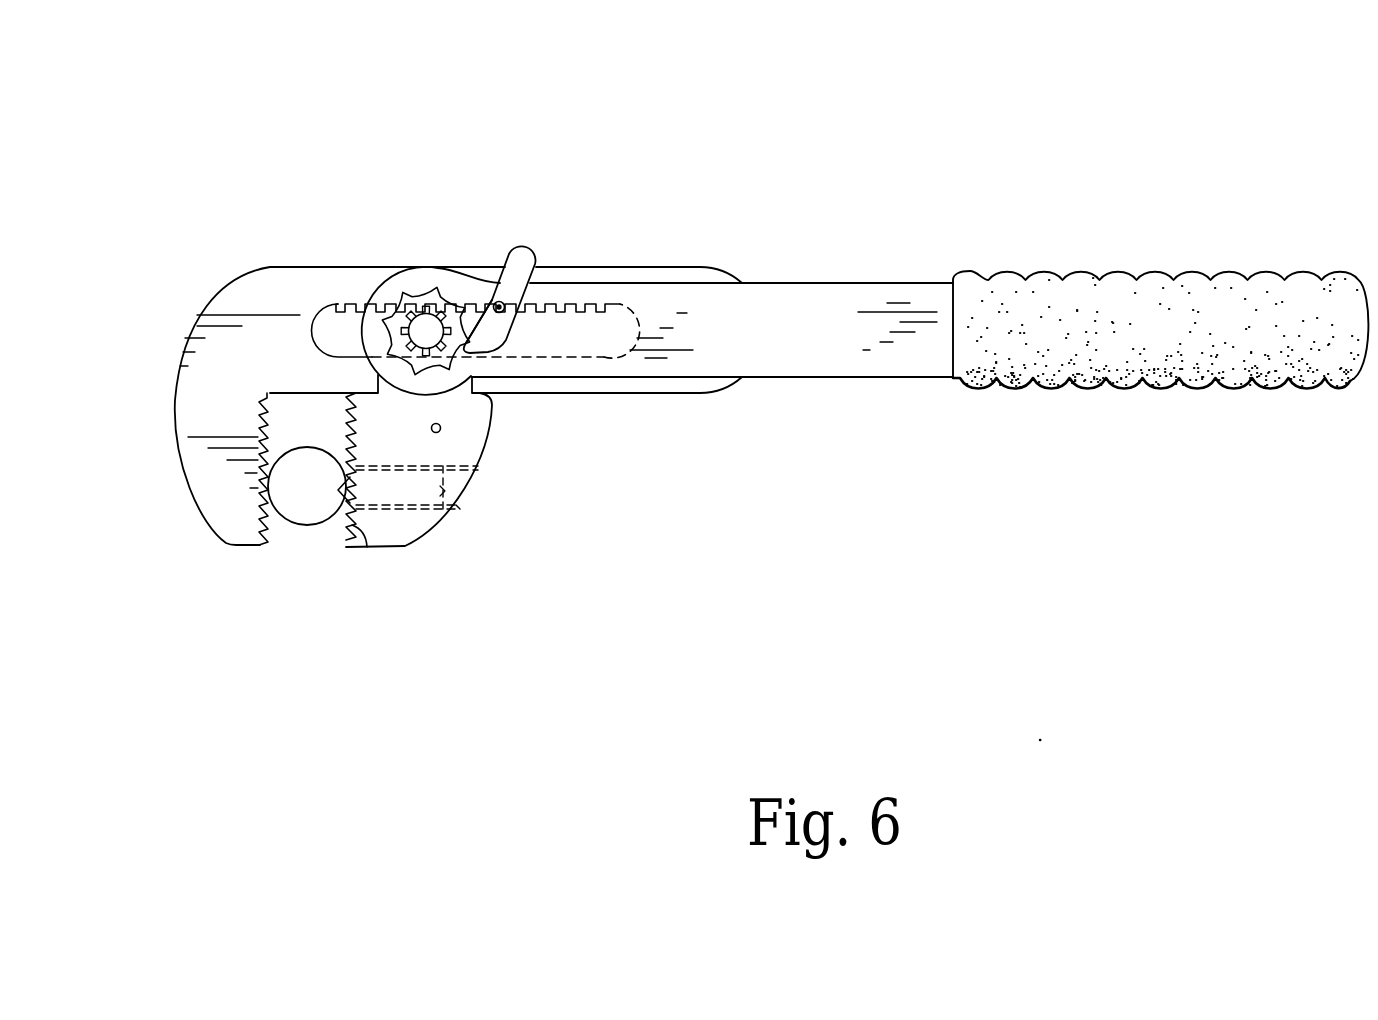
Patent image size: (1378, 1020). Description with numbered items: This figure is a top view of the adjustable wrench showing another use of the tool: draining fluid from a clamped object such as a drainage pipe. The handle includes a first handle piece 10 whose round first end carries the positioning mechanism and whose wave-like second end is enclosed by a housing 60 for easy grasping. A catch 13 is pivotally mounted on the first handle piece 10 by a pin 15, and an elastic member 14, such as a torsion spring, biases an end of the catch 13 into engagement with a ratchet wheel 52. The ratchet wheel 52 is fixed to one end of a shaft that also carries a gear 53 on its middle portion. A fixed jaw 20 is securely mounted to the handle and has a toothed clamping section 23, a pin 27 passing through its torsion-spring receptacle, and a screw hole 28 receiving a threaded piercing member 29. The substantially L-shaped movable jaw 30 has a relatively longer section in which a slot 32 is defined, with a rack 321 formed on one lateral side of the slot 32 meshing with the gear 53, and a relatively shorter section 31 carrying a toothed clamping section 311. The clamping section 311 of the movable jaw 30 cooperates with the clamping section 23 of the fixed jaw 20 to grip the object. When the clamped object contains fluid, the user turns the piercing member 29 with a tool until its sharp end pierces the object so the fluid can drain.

The first handle piece 10 is at (871, 308).
The catch 13 is at (528, 252).
The elastic member 14 is at (505, 333).
The pin 15 is at (497, 300).
The fixed jaw 20 is at (482, 485).
The clamping section 23 is at (366, 547).
The pin 27 is at (440, 432).
The screw hole 28 is at (412, 508).
The piercing member 29 is at (458, 508).
The movable jaw 30 is at (639, 217).
The relatively shorter section 31 is at (213, 420).
The clamping section 311 is at (260, 488).
The slot 32 is at (633, 325).
The rack 321 is at (564, 268).
The ratchet wheel 52 is at (398, 302).
The gear 53 is at (405, 333).
The housing 60 is at (1197, 302).